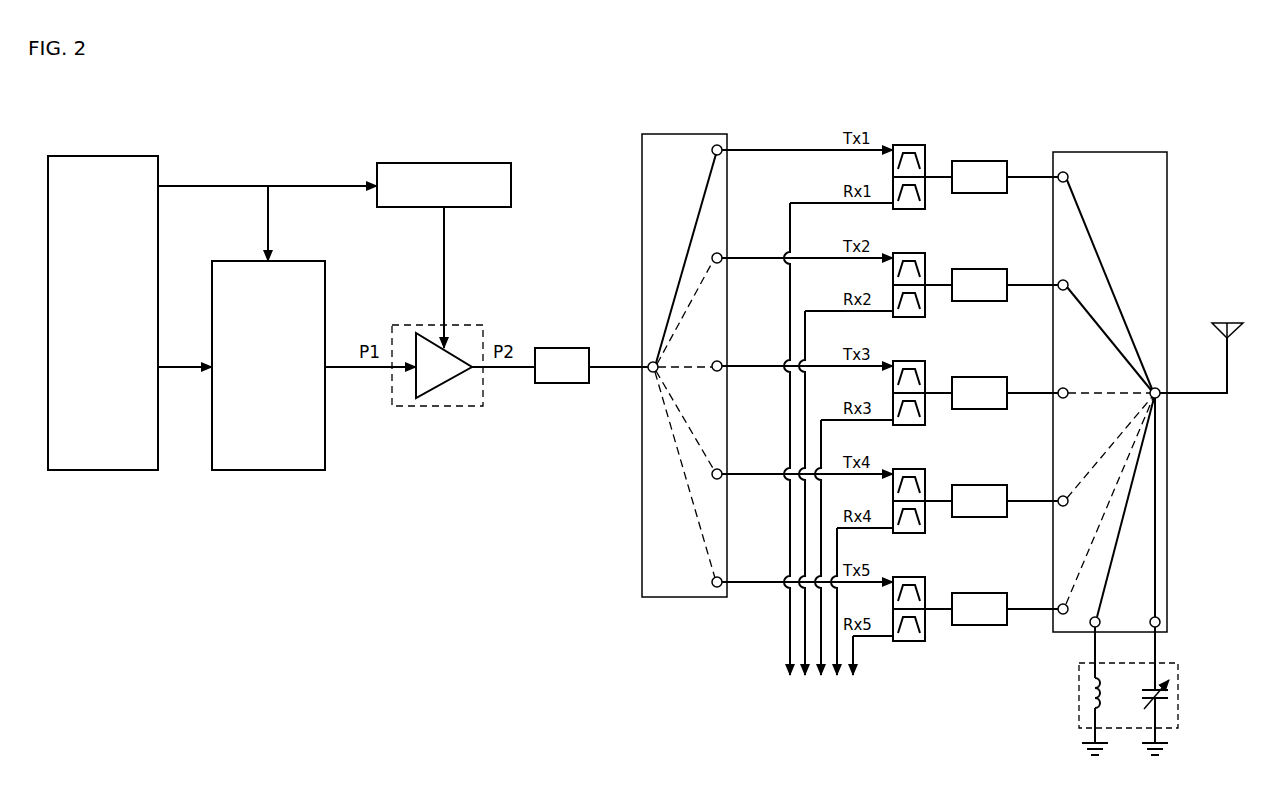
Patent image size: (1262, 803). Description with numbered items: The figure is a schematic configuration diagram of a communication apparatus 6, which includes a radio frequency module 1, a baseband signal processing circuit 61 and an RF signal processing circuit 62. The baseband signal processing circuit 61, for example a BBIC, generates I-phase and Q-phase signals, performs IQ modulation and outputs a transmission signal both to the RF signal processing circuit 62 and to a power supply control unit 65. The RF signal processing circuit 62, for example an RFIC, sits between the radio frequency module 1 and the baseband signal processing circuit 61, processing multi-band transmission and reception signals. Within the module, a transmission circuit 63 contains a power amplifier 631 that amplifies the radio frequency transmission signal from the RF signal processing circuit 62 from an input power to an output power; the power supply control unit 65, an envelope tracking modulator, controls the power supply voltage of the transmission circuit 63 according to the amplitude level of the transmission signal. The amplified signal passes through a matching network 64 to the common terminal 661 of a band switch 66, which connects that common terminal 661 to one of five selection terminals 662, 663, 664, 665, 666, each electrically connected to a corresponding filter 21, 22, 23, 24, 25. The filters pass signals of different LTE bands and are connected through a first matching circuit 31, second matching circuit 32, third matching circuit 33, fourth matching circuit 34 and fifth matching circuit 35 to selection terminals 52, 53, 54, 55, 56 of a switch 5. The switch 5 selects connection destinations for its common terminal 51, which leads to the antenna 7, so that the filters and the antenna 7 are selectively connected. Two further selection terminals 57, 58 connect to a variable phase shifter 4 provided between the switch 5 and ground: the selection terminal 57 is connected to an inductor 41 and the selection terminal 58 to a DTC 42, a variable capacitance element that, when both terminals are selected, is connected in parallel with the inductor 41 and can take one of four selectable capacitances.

The radio frequency module 1 is at (1174, 130).
The variable phase shifter 4 is at (1192, 734).
The switch 5 is at (1165, 194).
The communication apparatus 6 is at (1184, 67).
The antenna 7 is at (1226, 321).
The filter 21 is at (926, 148).
The filter 22 is at (926, 256).
The filter 23 is at (926, 364).
The filter 24 is at (926, 472).
The filter 25 is at (926, 580).
The first matching circuit 31 is at (998, 161).
The second matching circuit 32 is at (998, 269).
The third matching circuit 33 is at (998, 377).
The fourth matching circuit 34 is at (998, 485).
The fifth matching circuit 35 is at (980, 625).
The inductor 41 is at (1090, 699).
The DTC 42 is at (1172, 696).
The common terminal 51 is at (1160, 390).
The selection terminal 52 is at (1059, 182).
The selection terminal 53 is at (1059, 290).
The selection terminal 54 is at (1059, 398).
The selection terminal 55 is at (1059, 506).
The selection terminal 56 is at (1058, 605).
The selection terminal 57 is at (1091, 627).
The selection terminal 58 is at (1161, 623).
The baseband signal processing circuit 61 is at (100, 161).
The RF signal processing circuit 62 is at (300, 268).
The transmission circuit 63 is at (470, 325).
The power amplifier 631 is at (422, 333).
The matching network 64 is at (564, 348).
The power supply control unit 65 is at (442, 166).
The band switch 66 is at (682, 134).
The common terminal 661 is at (649, 371).
The selection terminal 662 is at (722, 154).
The selection terminal 663 is at (722, 262).
The selection terminal 664 is at (722, 362).
The selection terminal 665 is at (722, 470).
The selection terminal 666 is at (722, 578).